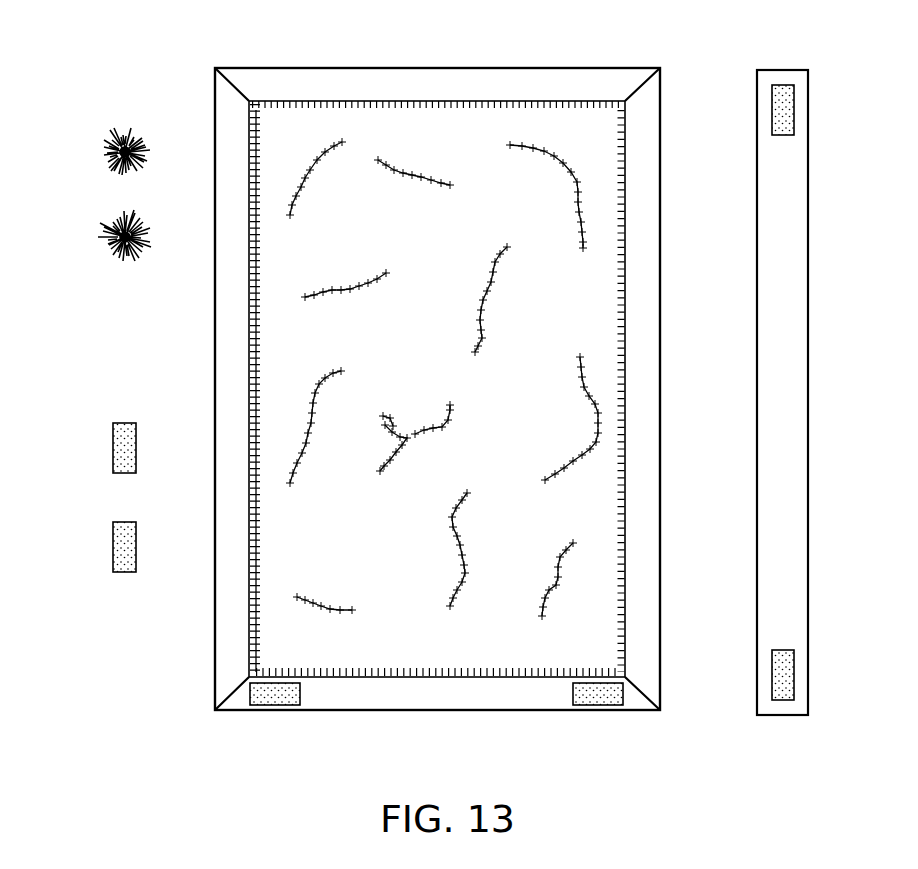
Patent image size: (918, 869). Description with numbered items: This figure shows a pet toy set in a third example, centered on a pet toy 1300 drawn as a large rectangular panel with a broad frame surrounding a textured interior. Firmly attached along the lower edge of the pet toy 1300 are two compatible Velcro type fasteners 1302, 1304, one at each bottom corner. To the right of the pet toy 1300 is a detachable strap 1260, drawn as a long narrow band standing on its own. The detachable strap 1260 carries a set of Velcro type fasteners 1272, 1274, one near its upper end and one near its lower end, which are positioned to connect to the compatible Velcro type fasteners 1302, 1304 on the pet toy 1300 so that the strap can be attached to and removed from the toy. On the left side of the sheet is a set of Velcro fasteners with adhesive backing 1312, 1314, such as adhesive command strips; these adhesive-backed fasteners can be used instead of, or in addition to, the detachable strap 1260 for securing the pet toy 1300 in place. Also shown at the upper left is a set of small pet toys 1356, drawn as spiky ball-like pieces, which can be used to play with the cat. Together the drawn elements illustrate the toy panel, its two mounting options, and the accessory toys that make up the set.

The pet toy 1300 is at (515, 68).
The Velcro type fastener 1302 is at (277, 698).
The Velcro type fastener 1304 is at (600, 698).
The Velcro fastener with adhesive backing 1312 is at (122, 455).
The Velcro fastener with adhesive backing 1314 is at (122, 555).
The pet toy 1356 is at (118, 135).
The detachable strap 1260 is at (808, 392).
The Velcro type fastener 1272 is at (782, 110).
The Velcro type fastener 1274 is at (782, 675).